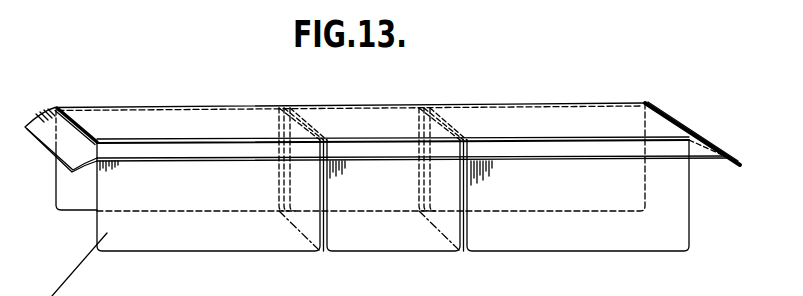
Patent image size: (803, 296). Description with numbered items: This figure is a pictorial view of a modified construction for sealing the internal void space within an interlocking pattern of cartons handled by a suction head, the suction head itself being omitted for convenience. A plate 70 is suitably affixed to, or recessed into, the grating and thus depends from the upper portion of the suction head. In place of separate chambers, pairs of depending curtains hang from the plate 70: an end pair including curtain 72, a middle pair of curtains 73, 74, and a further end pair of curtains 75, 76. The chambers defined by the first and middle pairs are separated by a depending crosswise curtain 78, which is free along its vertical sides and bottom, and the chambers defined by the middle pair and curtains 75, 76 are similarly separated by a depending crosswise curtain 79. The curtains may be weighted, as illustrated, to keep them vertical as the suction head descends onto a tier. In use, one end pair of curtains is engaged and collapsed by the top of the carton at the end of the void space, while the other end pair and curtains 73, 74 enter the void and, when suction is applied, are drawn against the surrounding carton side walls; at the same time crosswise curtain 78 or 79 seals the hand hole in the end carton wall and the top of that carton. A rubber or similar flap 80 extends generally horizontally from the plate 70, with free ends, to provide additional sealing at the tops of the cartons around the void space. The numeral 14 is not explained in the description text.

The plate 70 is at (493, 117).
The depending curtain 72 is at (78, 205).
The depending curtain 73 is at (353, 227).
The depending curtain 74 is at (372, 200).
The depending curtain 75 is at (540, 245).
The depending curtain 76 is at (563, 200).
The depending crosswise curtain 78 is at (302, 232).
The depending crosswise curtain 79 is at (447, 223).
The flap 80 is at (698, 152).
The rib 14 is at (260, 106).